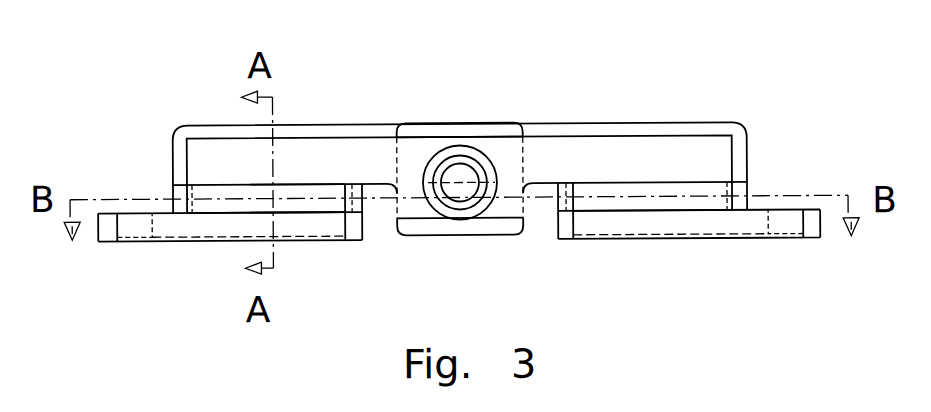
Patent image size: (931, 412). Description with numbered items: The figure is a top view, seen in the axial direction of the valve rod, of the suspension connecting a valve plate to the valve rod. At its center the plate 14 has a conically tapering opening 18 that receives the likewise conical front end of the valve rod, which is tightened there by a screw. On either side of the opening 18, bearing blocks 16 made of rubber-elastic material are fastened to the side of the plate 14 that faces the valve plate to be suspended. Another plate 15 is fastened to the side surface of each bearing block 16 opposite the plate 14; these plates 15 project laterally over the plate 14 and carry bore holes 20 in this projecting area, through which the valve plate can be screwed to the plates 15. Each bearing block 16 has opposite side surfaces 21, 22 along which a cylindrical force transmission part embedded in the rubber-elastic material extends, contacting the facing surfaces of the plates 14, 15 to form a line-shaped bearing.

The plate 14 is at (614, 158).
The plate 15 is at (207, 226).
The bearing block 16 is at (250, 189).
The conically tapering opening 18 is at (464, 182).
The bore hole 20 is at (135, 235).
The side surface 21 is at (297, 182).
The side surface 22 is at (318, 212).